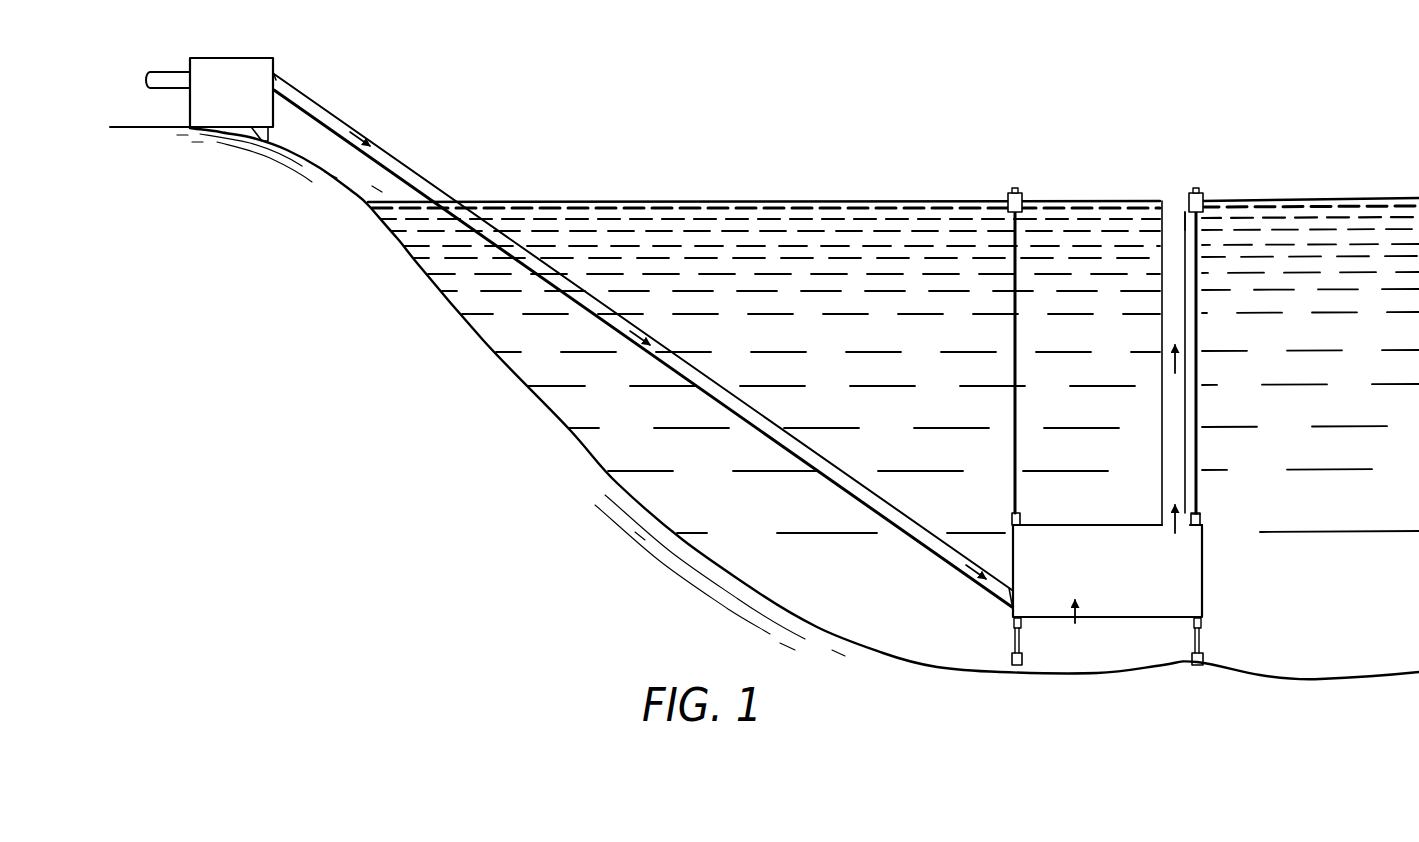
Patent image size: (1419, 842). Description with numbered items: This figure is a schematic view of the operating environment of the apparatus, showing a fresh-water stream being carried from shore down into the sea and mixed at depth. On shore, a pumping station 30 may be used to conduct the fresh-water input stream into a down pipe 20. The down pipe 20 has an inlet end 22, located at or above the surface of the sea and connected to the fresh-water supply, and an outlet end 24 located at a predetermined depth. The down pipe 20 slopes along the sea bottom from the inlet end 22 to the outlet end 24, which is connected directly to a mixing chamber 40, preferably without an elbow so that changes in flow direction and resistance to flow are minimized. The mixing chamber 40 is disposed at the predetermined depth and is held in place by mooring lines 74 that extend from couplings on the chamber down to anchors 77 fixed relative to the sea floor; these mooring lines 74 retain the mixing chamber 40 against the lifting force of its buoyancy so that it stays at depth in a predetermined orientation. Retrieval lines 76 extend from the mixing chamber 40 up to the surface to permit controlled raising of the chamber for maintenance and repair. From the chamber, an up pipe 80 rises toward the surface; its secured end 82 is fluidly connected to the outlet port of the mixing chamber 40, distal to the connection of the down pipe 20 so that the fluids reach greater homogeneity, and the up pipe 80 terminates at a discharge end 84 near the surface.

The down pipe 20 is at (403, 168).
The inlet end 22 is at (278, 77).
The outlet end 24 is at (1010, 609).
The pumping station 30 is at (247, 99).
The mixing chamber 40 is at (1203, 592).
The mooring lines 74 is at (1200, 645).
The retrieval lines 76 is at (1015, 232).
The anchors 77 is at (1011, 664).
The up pipe 80 is at (1162, 235).
The secured end 82 is at (1202, 518).
The discharge end 84 is at (1185, 215).